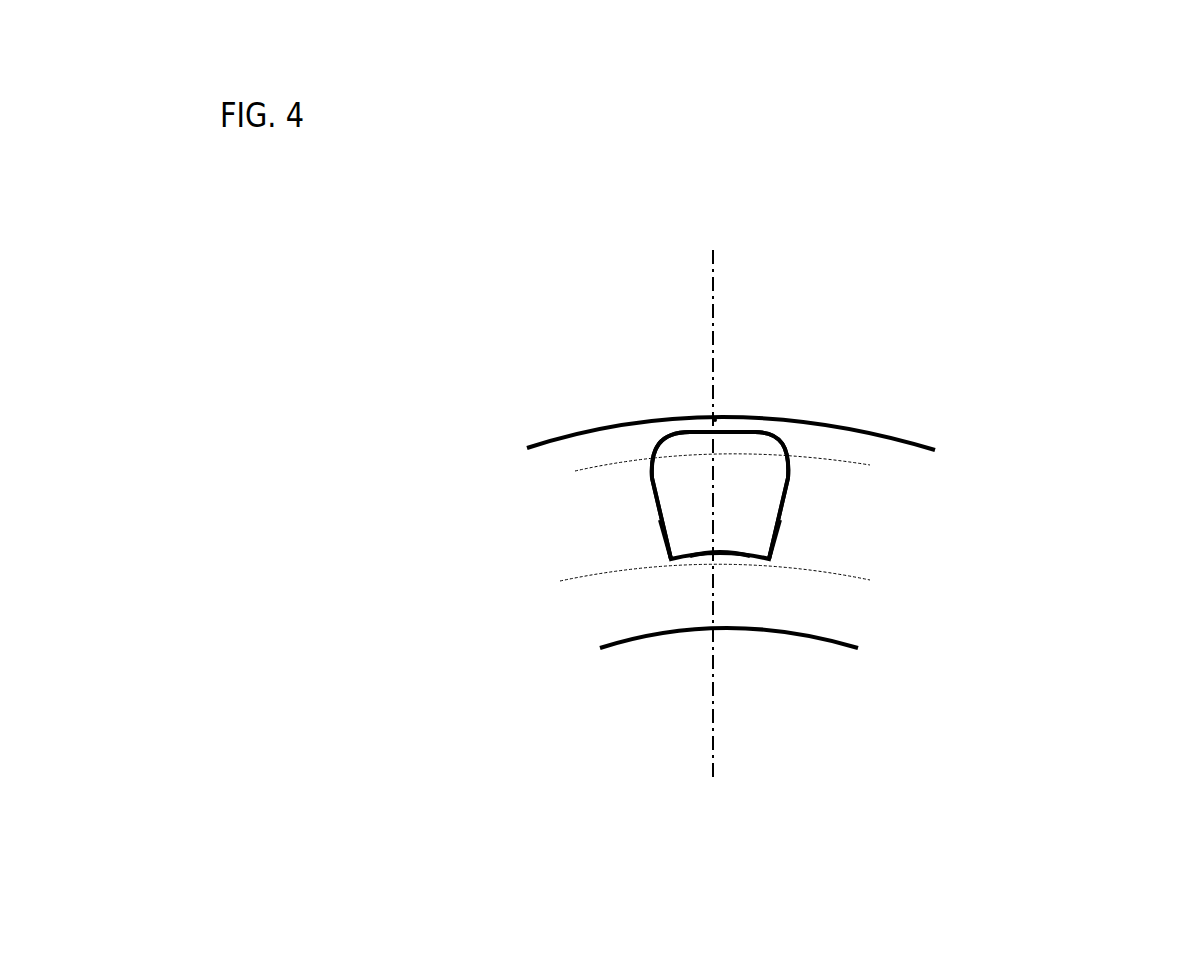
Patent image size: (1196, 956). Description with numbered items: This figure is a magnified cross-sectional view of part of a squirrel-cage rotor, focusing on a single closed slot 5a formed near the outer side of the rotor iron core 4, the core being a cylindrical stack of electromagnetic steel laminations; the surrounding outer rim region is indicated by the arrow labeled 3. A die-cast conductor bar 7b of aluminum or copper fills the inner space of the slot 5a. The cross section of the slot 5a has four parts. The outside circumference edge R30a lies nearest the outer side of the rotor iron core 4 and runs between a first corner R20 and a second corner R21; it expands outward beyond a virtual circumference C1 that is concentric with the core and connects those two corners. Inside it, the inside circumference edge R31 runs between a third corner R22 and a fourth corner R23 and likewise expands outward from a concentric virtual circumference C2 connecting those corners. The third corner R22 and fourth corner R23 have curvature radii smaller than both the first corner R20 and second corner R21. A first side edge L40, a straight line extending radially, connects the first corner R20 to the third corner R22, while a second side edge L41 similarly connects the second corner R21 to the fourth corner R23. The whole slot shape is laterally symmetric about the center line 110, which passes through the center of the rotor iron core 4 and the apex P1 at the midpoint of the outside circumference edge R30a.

The outer member 3 is at (935, 360).
The rotor iron core 4 is at (553, 446).
The slot 5a is at (700, 436).
The conductor bar 7b is at (760, 512).
The center line 110 is at (715, 718).
The apex P1 is at (718, 412).
The virtual circumference C1 is at (870, 460).
The virtual circumference C2 is at (590, 575).
The first corner R20 is at (644, 448).
The second corner R21 is at (795, 446).
The third corner R22 is at (672, 568).
The fourth corner R23 is at (772, 568).
The outside circumference edge R30a is at (748, 437).
The inside circumference edge R31 is at (713, 568).
The first side edge L40 is at (657, 512).
The second side edge L41 is at (772, 546).